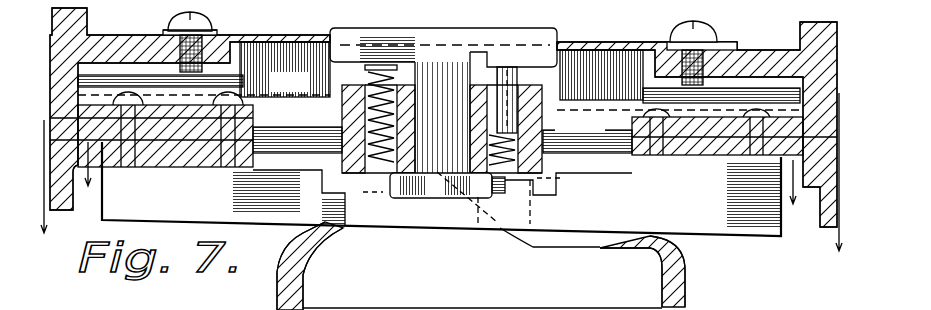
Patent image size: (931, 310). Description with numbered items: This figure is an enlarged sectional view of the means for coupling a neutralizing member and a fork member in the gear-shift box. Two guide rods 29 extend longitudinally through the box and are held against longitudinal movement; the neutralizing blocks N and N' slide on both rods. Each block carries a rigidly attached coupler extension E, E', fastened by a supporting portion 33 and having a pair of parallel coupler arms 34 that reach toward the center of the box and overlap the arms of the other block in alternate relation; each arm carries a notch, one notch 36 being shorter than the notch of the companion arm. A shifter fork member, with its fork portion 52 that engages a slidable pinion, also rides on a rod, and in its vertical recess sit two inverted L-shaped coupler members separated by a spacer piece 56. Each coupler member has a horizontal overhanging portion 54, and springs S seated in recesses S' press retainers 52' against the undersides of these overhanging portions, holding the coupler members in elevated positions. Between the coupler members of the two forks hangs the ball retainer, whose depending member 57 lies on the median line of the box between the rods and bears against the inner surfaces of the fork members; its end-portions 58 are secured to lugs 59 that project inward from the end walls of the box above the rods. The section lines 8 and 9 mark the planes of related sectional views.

The supporting end-portions 58 is at (168, 32).
The lugs 59 is at (228, 42).
The depending member 57 is at (441, 71).
The springs S is at (381, 83).
The overhanging portion 54 is at (507, 35).
The retainers 52' is at (519, 86).
The guide rods 29 is at (443, 121).
The supporting portion 33 is at (167, 170).
The section line 8 is at (441, 182).
The section line 9 is at (441, 183).
The neutralizing block N' is at (139, 203).
The coupler extension E' is at (189, 206).
The coupler arms 34 is at (273, 218).
The fork portion 52 is at (481, 266).
The notch 36 is at (345, 192).
The recesses S' is at (461, 213).
The spacer piece 56 is at (463, 200).
The neutralizing block N is at (613, 197).
The coupler extension E is at (733, 203).